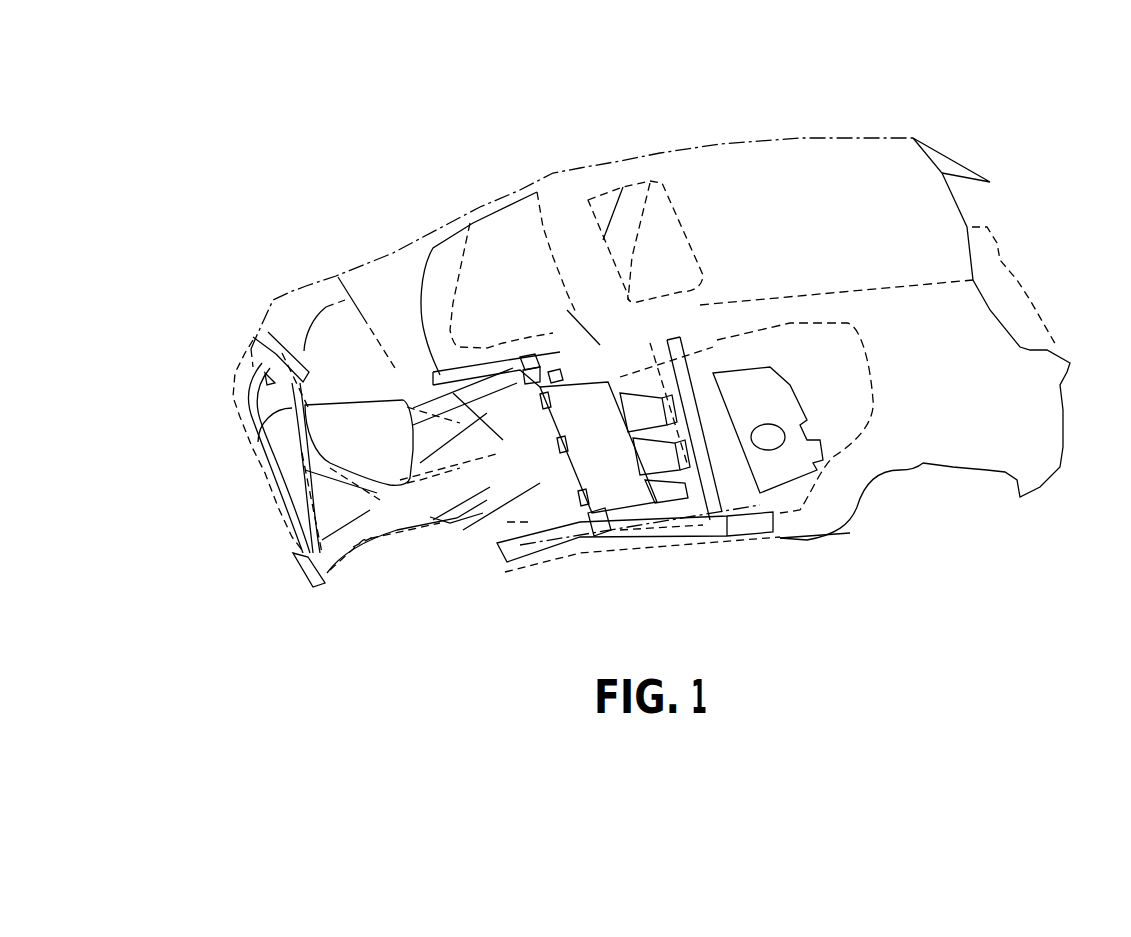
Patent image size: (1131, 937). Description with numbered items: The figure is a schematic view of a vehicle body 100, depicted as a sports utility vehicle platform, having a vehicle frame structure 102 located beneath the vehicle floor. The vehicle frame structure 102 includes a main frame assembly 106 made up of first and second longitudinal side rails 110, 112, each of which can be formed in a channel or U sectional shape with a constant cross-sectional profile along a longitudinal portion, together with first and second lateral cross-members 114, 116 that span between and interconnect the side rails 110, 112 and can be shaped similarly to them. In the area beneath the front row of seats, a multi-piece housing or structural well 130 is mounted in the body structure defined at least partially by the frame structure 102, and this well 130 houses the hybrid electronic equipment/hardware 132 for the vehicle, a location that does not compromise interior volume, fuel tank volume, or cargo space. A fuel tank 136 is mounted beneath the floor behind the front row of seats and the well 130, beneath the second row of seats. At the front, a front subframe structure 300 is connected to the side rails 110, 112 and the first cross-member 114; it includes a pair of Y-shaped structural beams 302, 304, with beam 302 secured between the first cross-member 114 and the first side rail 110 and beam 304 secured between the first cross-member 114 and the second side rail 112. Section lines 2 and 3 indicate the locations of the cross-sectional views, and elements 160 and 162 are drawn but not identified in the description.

The vehicle body 100 is at (802, 92).
The vehicle frame structure 102 is at (470, 573).
The main frame assembly 106 is at (790, 543).
The first side rail 110 is at (710, 530).
The second side rail 112 is at (548, 367).
The first cross-member 114 is at (572, 485).
The second cross-member 116 is at (683, 383).
The multi-piece well 130 is at (600, 403).
The hybrid electronic equipment/hardware 132 is at (639, 372).
The fuel tank 136 is at (768, 390).
The battery pack housing 160 is at (620, 518).
The housing bracket 162 is at (560, 368).
The front subframe structure 300 is at (410, 550).
The Y-shaped structural beam 302 is at (497, 540).
The Y-shaped structural beam 304 is at (430, 397).
The section line 2- 2 is at (250, 487).
The section line 3- 3 is at (497, 177).